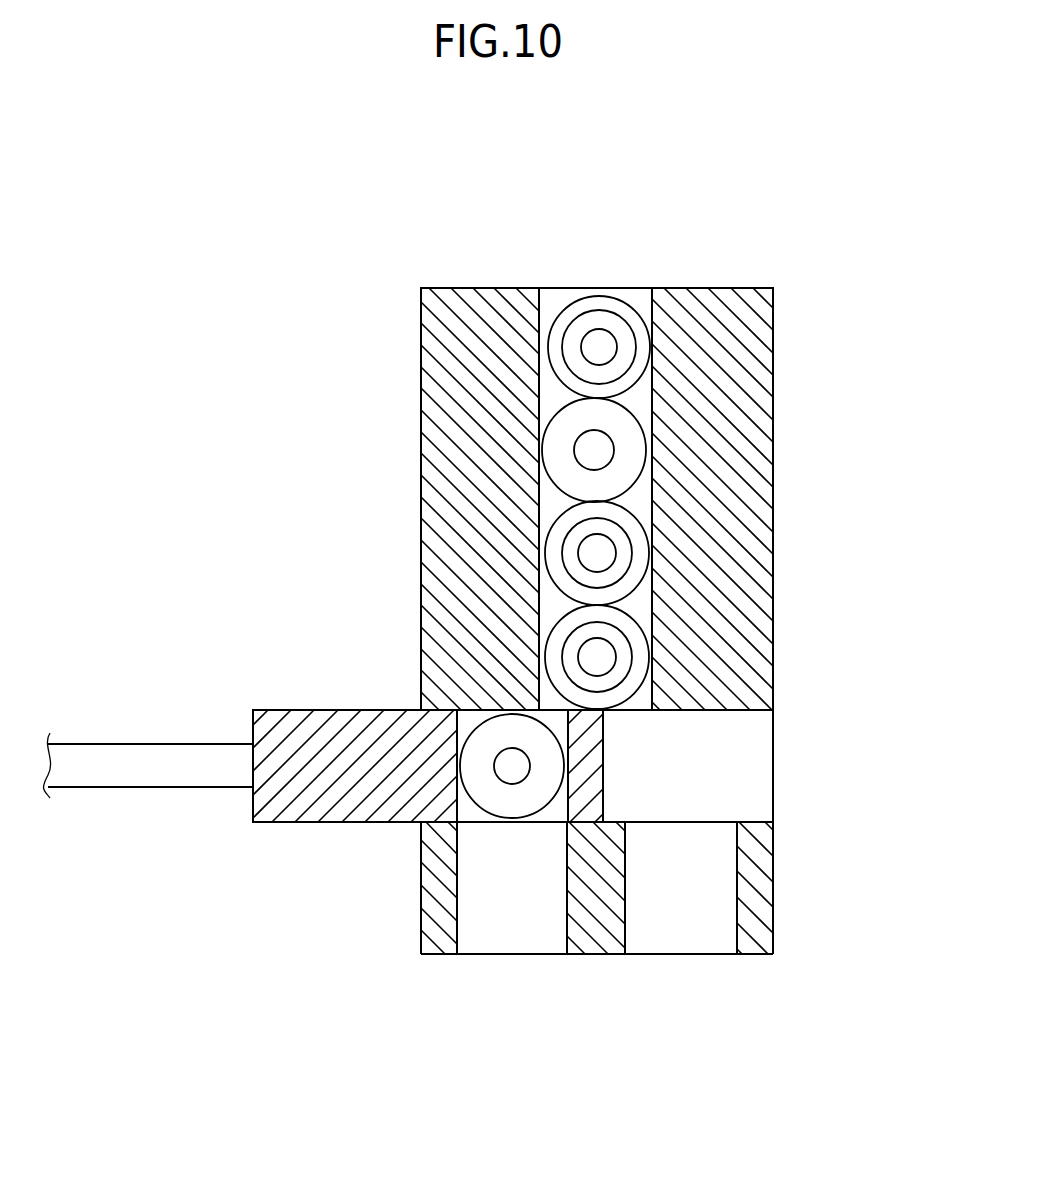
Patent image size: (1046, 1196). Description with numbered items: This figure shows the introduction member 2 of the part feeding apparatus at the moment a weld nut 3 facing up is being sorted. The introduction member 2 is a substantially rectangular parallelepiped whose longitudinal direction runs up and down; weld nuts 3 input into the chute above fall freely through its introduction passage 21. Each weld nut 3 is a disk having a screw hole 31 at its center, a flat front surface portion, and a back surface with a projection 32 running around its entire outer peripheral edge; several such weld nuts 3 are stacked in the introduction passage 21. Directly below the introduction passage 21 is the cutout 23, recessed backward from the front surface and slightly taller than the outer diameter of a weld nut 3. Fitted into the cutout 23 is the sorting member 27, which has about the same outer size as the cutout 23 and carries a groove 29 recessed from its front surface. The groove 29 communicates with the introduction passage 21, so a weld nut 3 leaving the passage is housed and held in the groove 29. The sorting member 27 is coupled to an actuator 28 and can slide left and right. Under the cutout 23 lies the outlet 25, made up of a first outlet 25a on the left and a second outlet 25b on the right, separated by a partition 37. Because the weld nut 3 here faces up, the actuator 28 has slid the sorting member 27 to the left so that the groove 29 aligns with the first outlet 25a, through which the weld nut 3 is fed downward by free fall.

The introduction member 2 is at (811, 343).
The weld nut 3 is at (553, 316).
The introduction passage 21 is at (641, 300).
The cutout 23 is at (740, 710).
The outlet 25 is at (417, 945).
The first outlet 25a is at (473, 933).
The second outlet 25b is at (711, 935).
The sorting member 27 is at (593, 780).
The actuator 28 is at (145, 775).
The groove 29 is at (551, 813).
The screw hole 31 is at (598, 346).
The projection 32 is at (571, 375).
The partition 37 is at (610, 935).